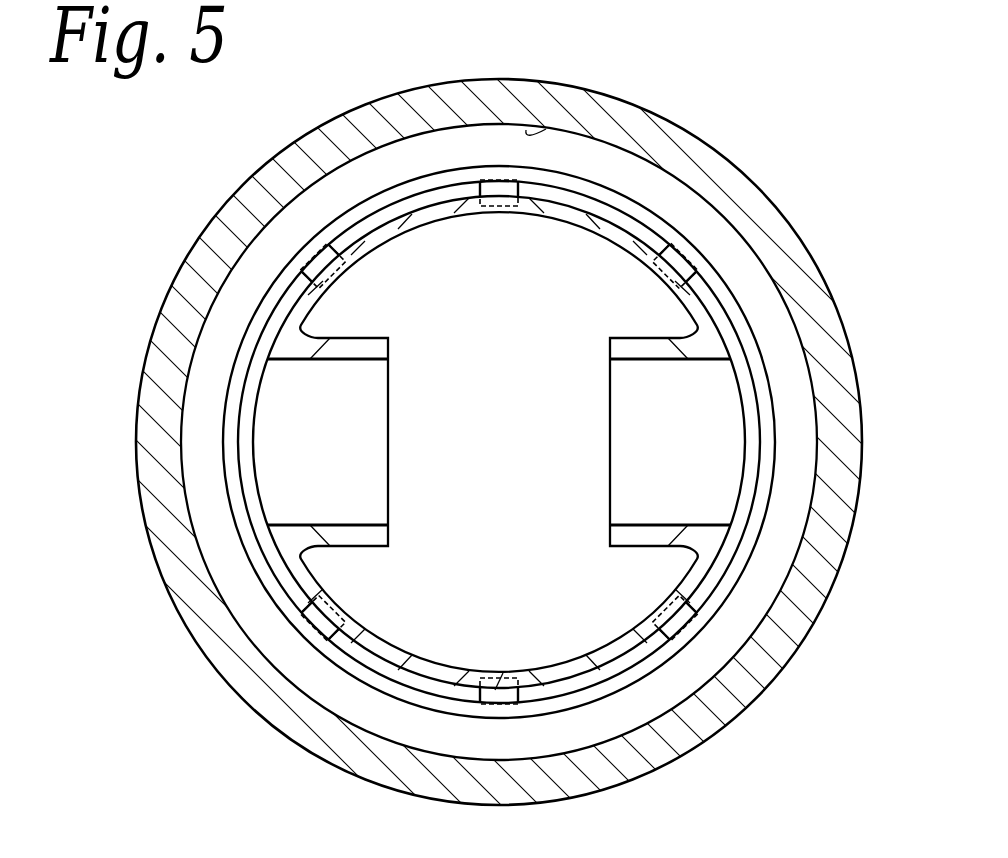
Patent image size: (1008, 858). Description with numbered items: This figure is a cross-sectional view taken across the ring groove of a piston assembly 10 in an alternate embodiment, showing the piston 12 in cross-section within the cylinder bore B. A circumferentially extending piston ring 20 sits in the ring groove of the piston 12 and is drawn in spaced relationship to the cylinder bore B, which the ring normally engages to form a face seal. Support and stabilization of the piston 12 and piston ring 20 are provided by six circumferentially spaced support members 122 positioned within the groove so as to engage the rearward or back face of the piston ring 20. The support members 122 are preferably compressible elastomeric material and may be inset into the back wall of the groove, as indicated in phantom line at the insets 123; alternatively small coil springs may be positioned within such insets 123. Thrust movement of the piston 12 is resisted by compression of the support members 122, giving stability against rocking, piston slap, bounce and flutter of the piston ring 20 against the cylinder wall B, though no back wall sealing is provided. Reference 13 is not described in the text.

The piston assembly 10 is at (667, 197).
The piston 12 is at (713, 315).
The yoke ring 13 is at (396, 209).
The piston ring 20 is at (240, 532).
The support members 122 is at (519, 178).
The insets 123 is at (687, 277).
The cylinder bore B is at (526, 130).